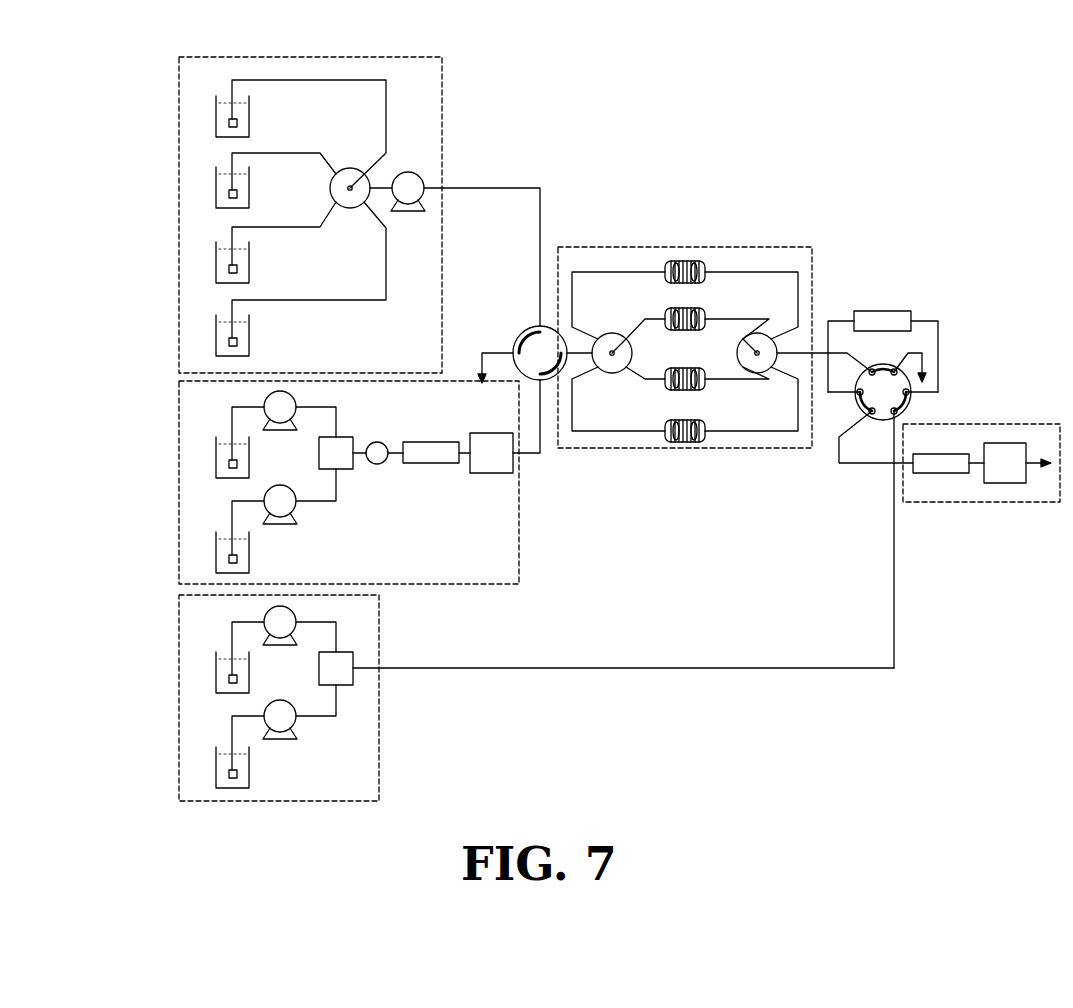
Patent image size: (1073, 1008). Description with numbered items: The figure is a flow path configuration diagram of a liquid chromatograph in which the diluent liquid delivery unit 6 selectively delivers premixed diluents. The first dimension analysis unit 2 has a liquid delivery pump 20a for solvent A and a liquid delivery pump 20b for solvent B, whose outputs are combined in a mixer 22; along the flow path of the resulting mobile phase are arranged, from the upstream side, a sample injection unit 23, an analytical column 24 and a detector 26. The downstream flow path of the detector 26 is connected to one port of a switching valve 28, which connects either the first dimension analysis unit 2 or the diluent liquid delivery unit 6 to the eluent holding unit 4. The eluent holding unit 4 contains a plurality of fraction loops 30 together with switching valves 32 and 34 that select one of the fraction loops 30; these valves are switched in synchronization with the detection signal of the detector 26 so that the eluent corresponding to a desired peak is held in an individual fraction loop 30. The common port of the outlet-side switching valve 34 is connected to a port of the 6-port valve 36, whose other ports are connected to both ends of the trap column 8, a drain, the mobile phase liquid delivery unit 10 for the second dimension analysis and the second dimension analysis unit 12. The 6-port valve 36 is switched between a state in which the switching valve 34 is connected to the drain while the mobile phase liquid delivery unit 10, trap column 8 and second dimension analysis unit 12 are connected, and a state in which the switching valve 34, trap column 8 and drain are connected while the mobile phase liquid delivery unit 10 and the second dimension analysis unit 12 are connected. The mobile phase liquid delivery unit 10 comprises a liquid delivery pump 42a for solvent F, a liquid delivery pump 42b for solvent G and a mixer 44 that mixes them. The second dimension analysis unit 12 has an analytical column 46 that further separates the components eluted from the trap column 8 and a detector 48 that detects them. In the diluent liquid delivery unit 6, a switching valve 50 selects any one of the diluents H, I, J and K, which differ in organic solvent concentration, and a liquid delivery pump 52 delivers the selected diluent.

The first dimension analysis unit 2 is at (522, 556).
The eluent holding unit 4 is at (746, 244).
The diluent liquid delivery unit 6 is at (446, 84).
The trap column 8 is at (897, 310).
The mobile phase liquid delivery unit for a second dimension analysis 10 is at (382, 768).
The second dimension analysis unit 12 is at (1001, 424).
The liquid delivery pump 20a is at (279, 430).
The liquid delivery pump 20b is at (281, 525).
The mixer 22 is at (345, 470).
The sample injection unit 23 is at (386, 465).
The analytical column 24 is at (436, 466).
The detector 26 is at (491, 476).
The switching valve 28 is at (526, 333).
The fraction loops 30 is at (674, 258).
The switching valve 32 is at (613, 336).
The switching valve 34 is at (758, 336).
The 6-port valve 36 is at (912, 402).
The liquid delivery pump 42a is at (282, 646).
The liquid delivery pump 42b is at (282, 740).
The mixer 44 is at (345, 688).
The analytical column 46 is at (940, 476).
The detector 48 is at (1005, 485).
The switching valve 50 is at (349, 182).
The liquid delivery pump 52 is at (410, 170).